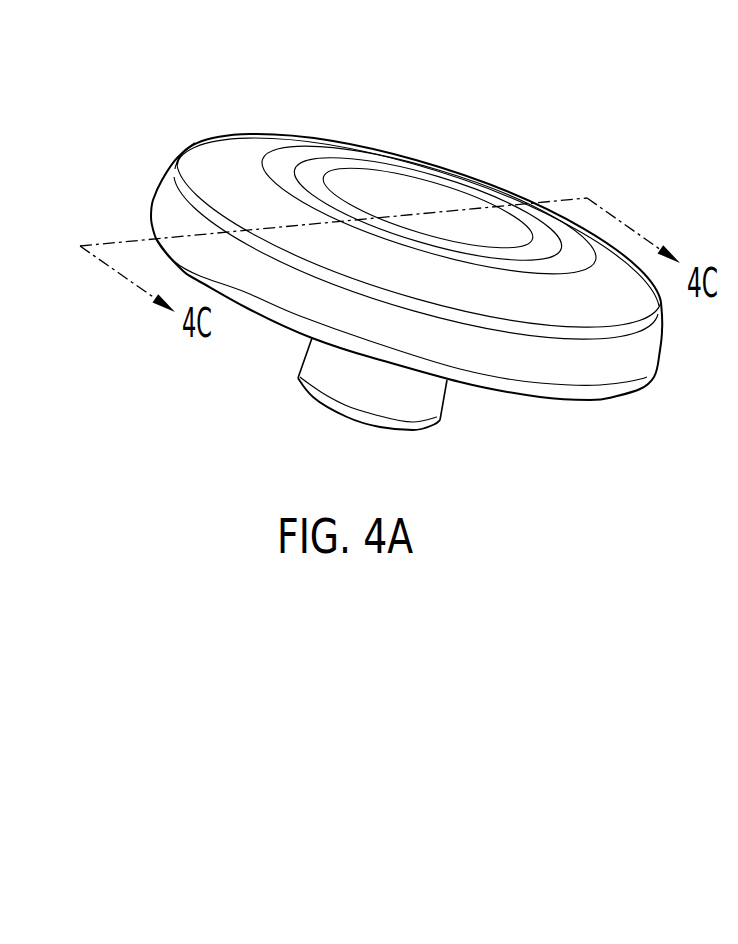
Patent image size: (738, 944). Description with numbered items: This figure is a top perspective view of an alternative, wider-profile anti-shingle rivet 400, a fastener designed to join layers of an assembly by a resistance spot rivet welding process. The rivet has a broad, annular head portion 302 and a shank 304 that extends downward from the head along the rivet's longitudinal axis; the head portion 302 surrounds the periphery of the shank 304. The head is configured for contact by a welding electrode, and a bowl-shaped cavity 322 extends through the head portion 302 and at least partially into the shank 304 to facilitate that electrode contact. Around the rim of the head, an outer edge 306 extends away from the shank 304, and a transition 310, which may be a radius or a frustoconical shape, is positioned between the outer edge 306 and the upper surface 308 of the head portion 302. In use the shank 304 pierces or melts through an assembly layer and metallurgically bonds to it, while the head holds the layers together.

The anti-shingle rivet 400 is at (375, 230).
The head portion 302 is at (220, 177).
The shank 304 is at (298, 378).
The outer edge 306 is at (167, 207).
The upper surface 308 is at (270, 137).
The transition 310 is at (173, 167).
The cavity 322 is at (402, 198).